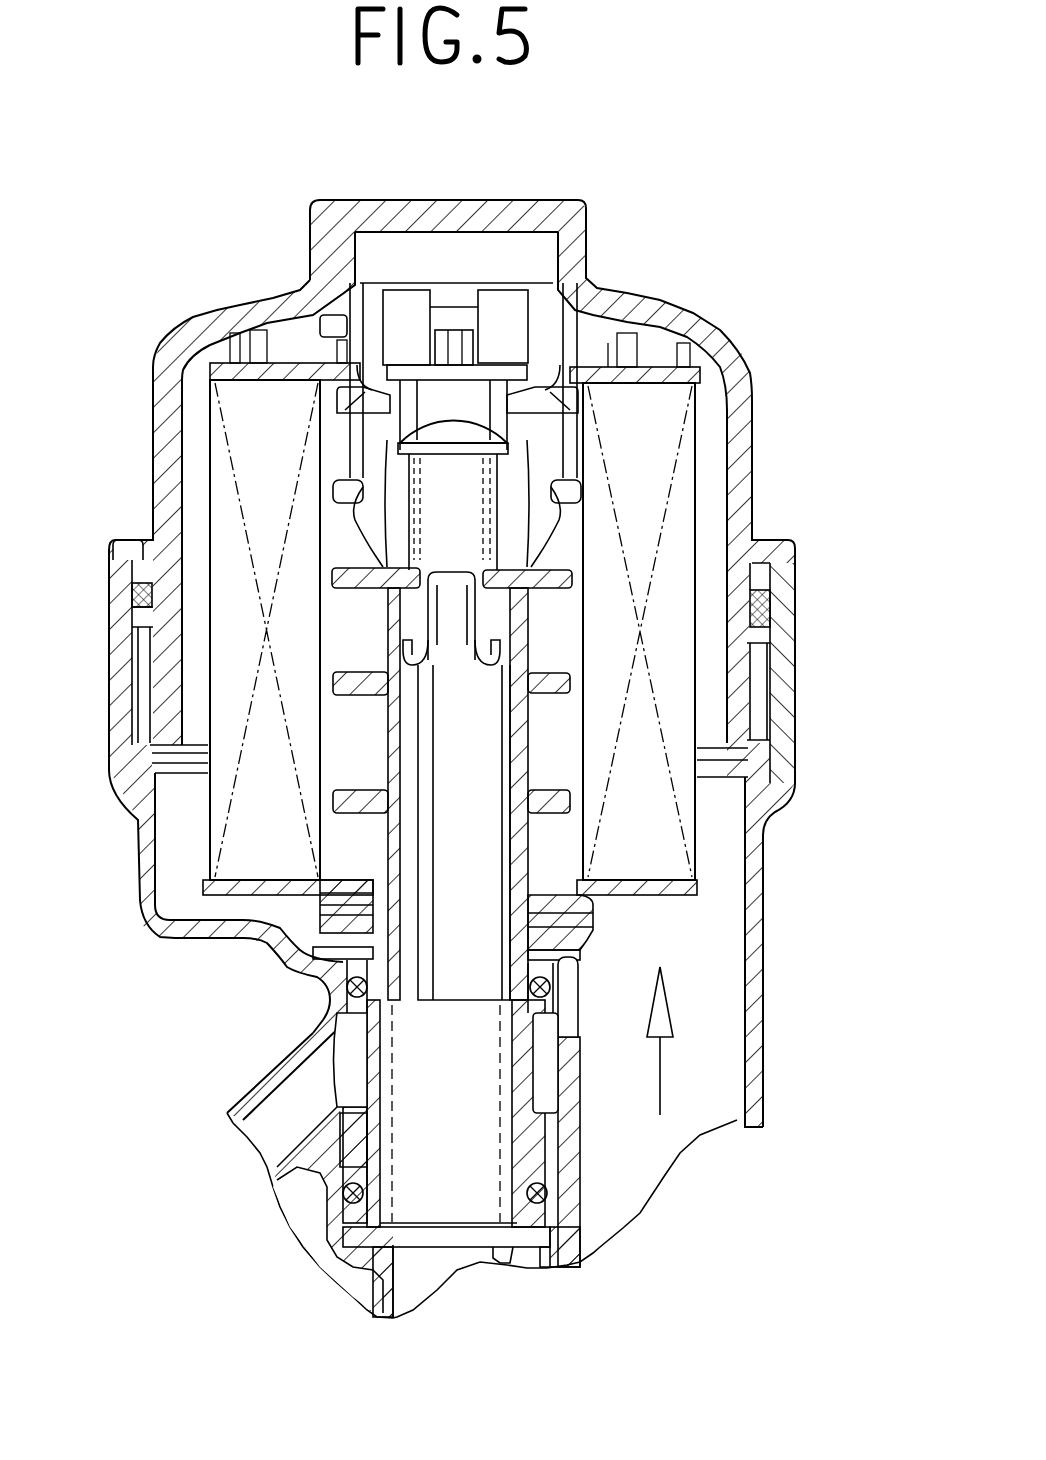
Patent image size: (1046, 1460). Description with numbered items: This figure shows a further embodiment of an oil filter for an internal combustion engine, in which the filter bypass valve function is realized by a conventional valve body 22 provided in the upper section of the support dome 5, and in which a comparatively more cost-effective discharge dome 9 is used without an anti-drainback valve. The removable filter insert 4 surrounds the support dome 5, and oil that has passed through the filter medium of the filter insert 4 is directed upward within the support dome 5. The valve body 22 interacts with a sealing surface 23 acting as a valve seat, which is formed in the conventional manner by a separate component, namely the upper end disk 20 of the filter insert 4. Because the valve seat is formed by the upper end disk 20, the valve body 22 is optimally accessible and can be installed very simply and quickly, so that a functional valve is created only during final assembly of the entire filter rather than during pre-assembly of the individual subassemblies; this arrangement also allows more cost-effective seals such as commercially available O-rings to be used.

The filter insert 4 is at (672, 638).
The support dome 5 is at (545, 567).
The discharge dome 9 is at (523, 1140).
The upper end disk 20 is at (613, 372).
The valve body 22 is at (440, 430).
The sealing surface 23 is at (498, 413).